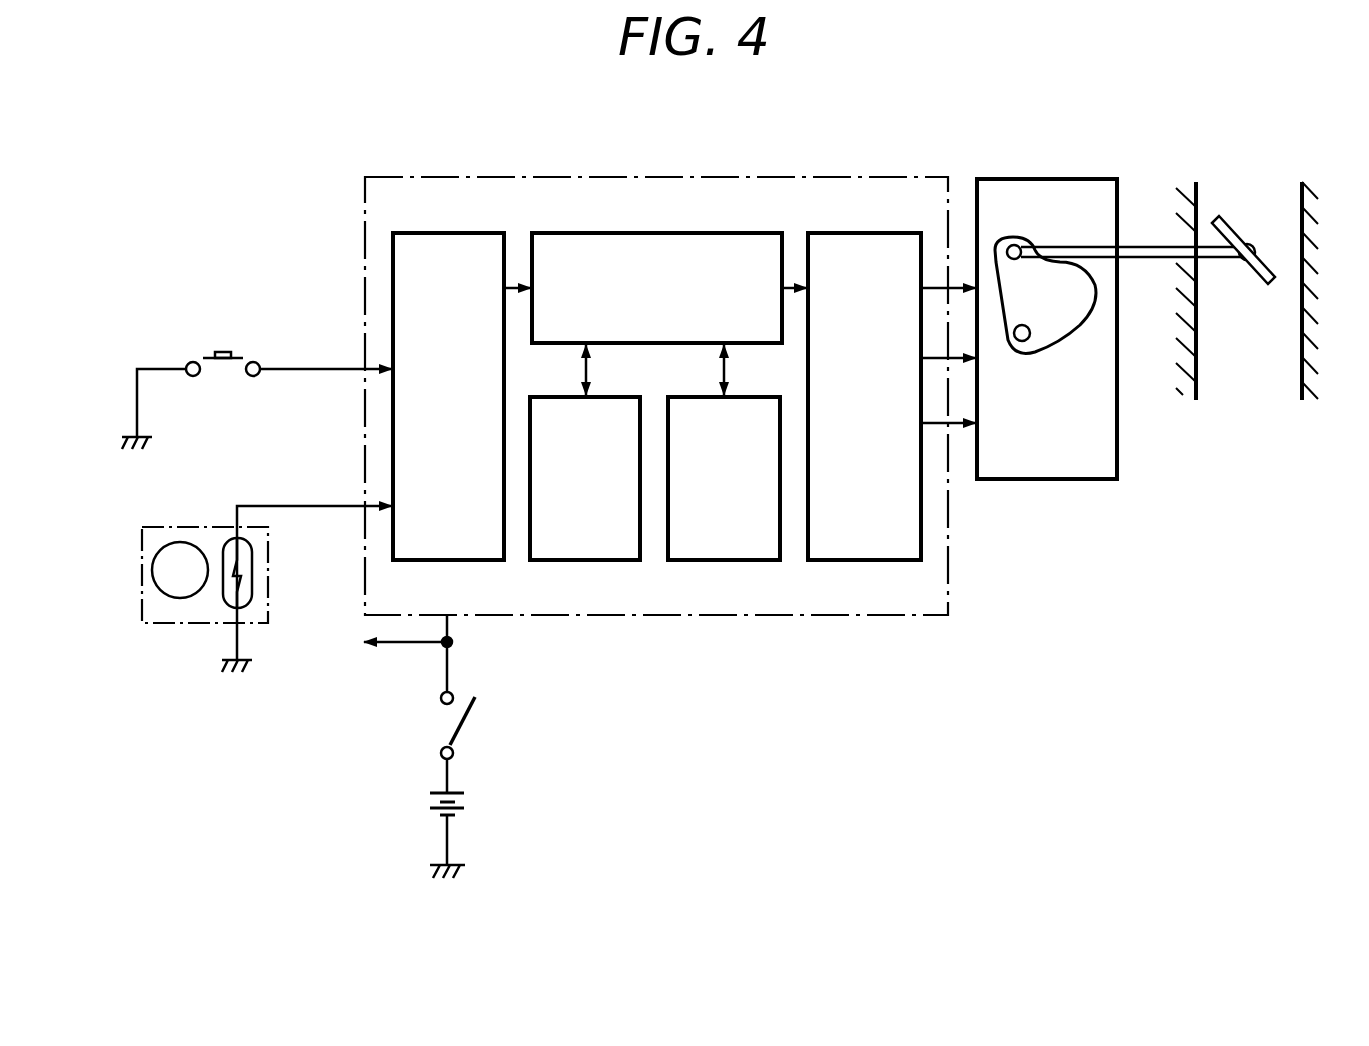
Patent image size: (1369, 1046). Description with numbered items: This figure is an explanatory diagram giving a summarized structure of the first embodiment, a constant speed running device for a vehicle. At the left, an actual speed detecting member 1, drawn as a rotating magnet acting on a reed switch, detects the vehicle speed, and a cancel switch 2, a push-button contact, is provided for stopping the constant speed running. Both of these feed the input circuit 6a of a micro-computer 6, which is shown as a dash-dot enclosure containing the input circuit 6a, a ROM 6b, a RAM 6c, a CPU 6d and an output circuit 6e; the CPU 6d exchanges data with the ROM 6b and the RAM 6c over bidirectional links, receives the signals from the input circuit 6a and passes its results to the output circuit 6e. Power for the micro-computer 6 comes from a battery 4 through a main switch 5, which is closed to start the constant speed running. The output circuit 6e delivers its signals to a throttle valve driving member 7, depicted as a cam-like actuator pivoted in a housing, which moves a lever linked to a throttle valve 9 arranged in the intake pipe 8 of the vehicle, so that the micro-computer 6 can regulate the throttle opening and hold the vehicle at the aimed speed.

The actual speed detecting member 1 is at (159, 523).
The cancel switch 2 is at (227, 341).
The battery 4 is at (475, 810).
The main switch 5 is at (472, 733).
The micro-computer 6 is at (897, 175).
The input circuit 6a is at (464, 232).
The ROM 6b is at (612, 394).
The RAM 6c is at (748, 394).
The CPU 6d is at (736, 232).
The output circuit 6e is at (884, 232).
The throttle valve driving member 7 is at (1076, 176).
The intake pipe 8 is at (1318, 232).
The throttle valve 9 is at (1257, 255).